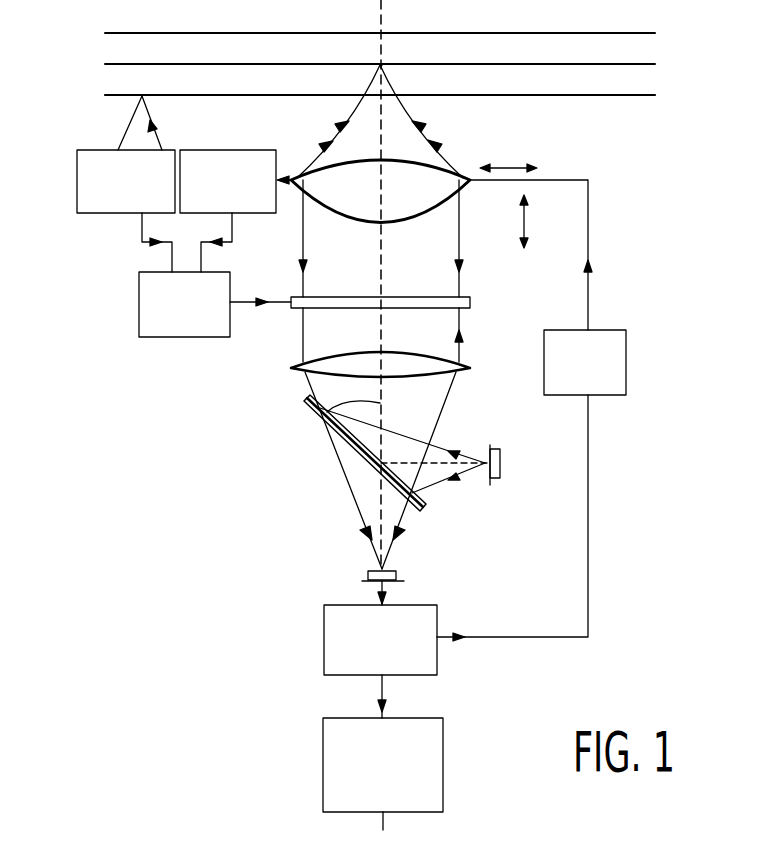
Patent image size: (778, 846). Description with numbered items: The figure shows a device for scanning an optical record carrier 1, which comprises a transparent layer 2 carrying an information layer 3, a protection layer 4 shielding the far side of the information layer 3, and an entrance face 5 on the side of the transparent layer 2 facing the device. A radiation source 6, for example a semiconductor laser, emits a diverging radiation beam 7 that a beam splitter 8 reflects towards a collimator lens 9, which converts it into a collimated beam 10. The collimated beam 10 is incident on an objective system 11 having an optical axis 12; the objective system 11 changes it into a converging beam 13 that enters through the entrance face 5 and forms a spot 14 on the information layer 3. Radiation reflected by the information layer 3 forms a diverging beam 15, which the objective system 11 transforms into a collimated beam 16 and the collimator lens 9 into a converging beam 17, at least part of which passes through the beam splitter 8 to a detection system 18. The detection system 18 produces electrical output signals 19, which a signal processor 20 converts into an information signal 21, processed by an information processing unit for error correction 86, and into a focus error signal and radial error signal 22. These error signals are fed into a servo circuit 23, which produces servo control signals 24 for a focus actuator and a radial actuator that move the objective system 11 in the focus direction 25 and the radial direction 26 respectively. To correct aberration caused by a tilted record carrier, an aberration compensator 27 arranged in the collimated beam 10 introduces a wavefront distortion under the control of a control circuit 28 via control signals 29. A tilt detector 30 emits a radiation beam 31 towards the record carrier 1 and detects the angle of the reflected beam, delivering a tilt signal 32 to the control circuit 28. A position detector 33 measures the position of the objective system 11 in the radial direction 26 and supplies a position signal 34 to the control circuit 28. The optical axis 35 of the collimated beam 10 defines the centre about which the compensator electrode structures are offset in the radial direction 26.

The optical record carrier 1 is at (601, 25).
The transparent layer 2 is at (650, 82).
The information layer 3 is at (650, 65).
The protection layer 4 is at (650, 46).
The entrance face 5 is at (650, 97).
The radiation source 6 is at (503, 466).
The diverging radiation beam 7 is at (475, 459).
The beam splitter 8 is at (428, 509).
The collimator lens 9 is at (465, 371).
The collimated beam 10 is at (460, 349).
The objective system 11 is at (462, 190).
The optical axis 12 is at (383, 10).
The converging beam 13 is at (424, 128).
The spot 14 is at (383, 63).
The diverging beam 15 is at (440, 148).
The collimated beam 16 is at (460, 240).
The converging beam 17 is at (358, 513).
The detection system 18 is at (397, 574).
The electrical output signals 19 is at (378, 586).
The signal processor 20 is at (323, 638).
The information signal 21 is at (375, 685).
The focus error signal and radial error signal 22 is at (520, 643).
The servo circuit 23 is at (628, 363).
The servo control signals 24 is at (590, 220).
The focus direction 25 is at (527, 222).
The radial direction 26 is at (505, 168).
The aberration compensator 27 is at (472, 303).
The control circuit 28 is at (138, 302).
The control signals 29 is at (282, 300).
The tilt detector 30 is at (76, 183).
The radiation beam 31 is at (160, 136).
The tilt signal 32 is at (140, 228).
The position detector 33 is at (262, 148).
The position signal 34 is at (234, 228).
The optical axis of collimated beam 35 is at (331, 426).
The information processing unit for error correction 86 is at (322, 768).